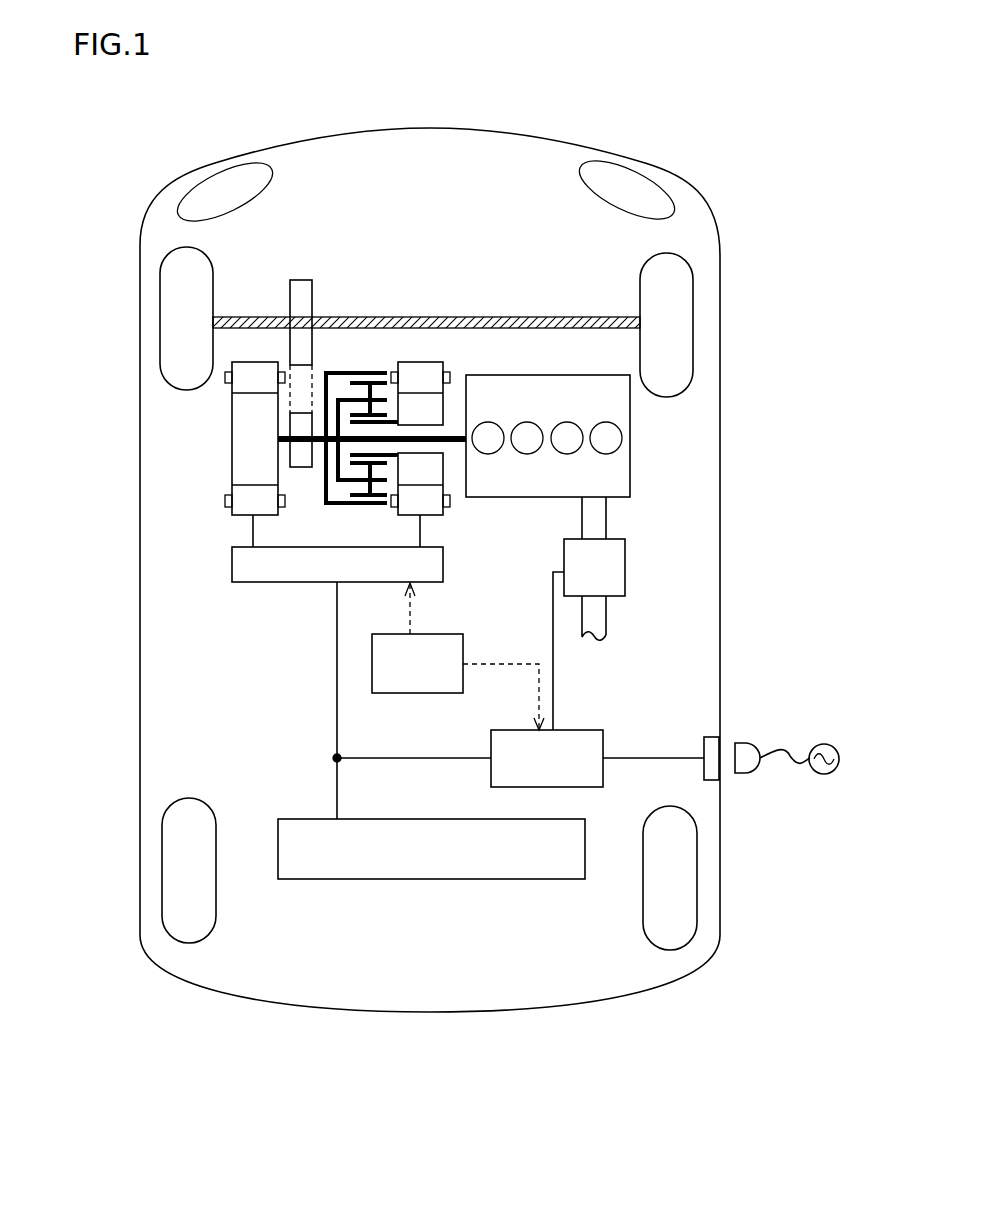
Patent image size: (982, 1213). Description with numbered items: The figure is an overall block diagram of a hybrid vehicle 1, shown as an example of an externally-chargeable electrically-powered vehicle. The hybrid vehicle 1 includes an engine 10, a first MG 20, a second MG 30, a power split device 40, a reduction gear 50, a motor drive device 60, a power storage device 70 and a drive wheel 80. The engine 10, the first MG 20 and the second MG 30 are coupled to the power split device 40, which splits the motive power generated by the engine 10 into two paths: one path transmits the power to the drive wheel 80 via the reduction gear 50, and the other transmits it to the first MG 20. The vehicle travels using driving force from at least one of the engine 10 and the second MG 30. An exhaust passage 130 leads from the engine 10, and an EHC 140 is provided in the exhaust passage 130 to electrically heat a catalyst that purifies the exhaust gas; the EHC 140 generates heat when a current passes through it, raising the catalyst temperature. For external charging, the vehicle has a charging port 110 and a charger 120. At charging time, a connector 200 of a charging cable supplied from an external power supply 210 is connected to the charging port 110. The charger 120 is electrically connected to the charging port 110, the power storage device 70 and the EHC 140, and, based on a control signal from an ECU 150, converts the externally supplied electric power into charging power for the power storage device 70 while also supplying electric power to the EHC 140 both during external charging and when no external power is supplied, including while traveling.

The hybrid vehicle 1 is at (173, 87).
The engine 10 is at (630, 482).
The first MG 20 is at (420, 362).
The second MG 30 is at (232, 456).
The power split device 40 is at (358, 373).
The reduction gear 50 is at (305, 259).
The motor drive device 60 is at (232, 564).
The power storage device 70 is at (420, 879).
The drive wheel 80 is at (693, 327).
The charging port 110 is at (710, 737).
The charger 120 is at (578, 730).
The exhaust passage 130 is at (600, 518).
The EHC 140 is at (625, 568).
The ECU 150 is at (448, 634).
The connector 200 is at (747, 773).
The external power supply 210 is at (823, 774).